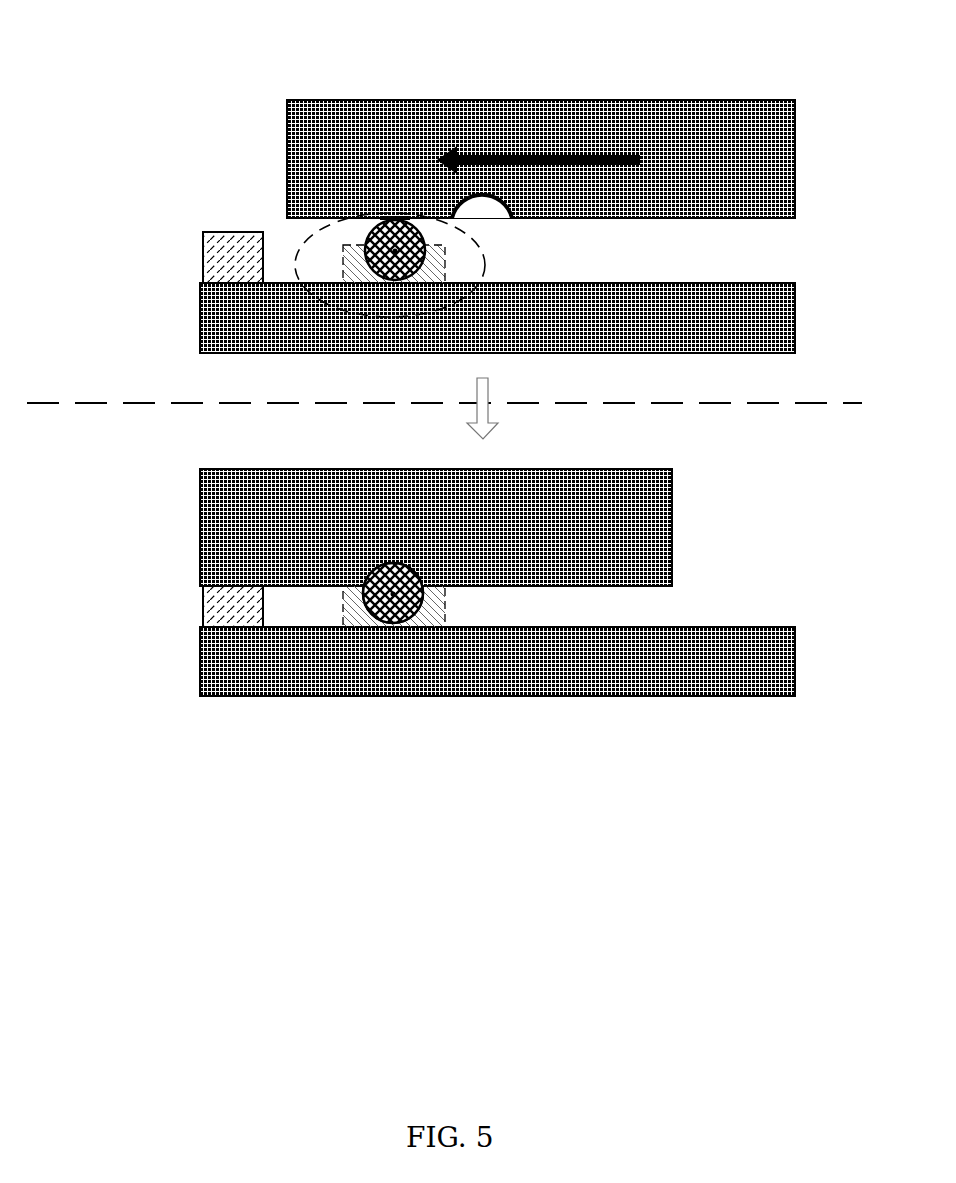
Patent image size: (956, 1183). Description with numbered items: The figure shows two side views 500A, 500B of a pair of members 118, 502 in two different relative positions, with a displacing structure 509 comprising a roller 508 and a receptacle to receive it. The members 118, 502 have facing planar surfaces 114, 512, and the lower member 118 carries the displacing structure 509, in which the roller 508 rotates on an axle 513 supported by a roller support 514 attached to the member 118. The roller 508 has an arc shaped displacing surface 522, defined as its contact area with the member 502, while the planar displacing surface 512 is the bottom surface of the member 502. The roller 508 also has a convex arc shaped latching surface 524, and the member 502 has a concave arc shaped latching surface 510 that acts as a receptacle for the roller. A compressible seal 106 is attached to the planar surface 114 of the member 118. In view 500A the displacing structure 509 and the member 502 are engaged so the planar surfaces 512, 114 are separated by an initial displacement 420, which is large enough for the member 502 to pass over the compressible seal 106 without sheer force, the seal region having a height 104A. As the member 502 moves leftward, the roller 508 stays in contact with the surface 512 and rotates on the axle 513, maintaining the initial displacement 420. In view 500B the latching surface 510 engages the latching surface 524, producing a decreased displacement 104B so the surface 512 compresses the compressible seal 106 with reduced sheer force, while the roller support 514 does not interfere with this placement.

The first side view 500A is at (127, 66).
The second side view 500B is at (127, 471).
The member 502 is at (541, 159).
The concave arc shaped latching surface 510 is at (482, 210).
The planar displacing surface 512 is at (642, 219).
The arc shaped displacing surface 522 is at (392, 208).
The displacing structure 509 is at (300, 247).
The axle 513 is at (392, 252).
The roller support 514 is at (343, 265).
The roller 508 is at (408, 264).
The compressible seal 106 is at (233, 429).
The displacement 104A is at (188, 232).
The decreased displacement 104B is at (188, 586).
The planar surface 114 is at (668, 283).
The member 118 is at (497, 318).
The initial displacement 420 is at (830, 218).
The convex arc shaped latching surface 524 is at (430, 567).